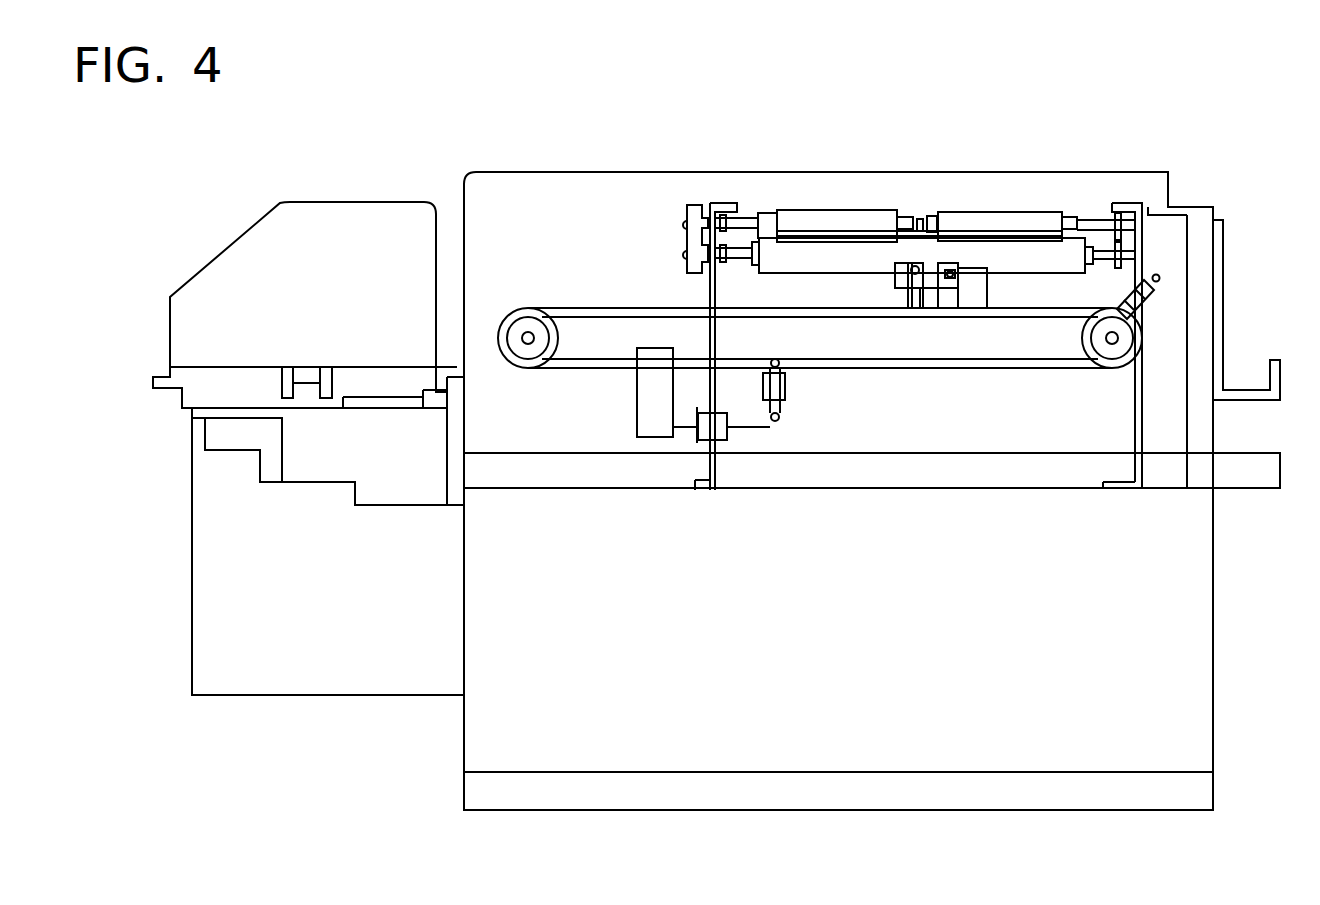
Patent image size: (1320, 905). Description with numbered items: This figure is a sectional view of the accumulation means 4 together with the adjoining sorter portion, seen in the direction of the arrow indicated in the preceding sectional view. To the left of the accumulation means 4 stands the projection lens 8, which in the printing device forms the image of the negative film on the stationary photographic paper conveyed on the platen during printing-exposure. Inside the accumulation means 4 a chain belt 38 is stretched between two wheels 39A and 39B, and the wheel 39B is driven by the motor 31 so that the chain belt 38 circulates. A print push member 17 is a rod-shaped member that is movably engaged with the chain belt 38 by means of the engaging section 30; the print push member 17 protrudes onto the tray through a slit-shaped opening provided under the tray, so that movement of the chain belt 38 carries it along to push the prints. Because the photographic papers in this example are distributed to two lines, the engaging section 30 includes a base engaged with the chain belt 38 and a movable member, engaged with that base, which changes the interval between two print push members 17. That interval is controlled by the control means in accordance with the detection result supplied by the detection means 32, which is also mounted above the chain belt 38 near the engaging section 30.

The accumulation means 4 is at (622, 168).
The projection lens 8 is at (372, 222).
The print push member 17 is at (915, 266).
The engaging section 30 is at (971, 298).
The motor 31 is at (655, 432).
The detection means 32 is at (952, 270).
The chain belt 38 is at (884, 370).
The wheel 39A is at (1110, 353).
The wheel 39B is at (533, 350).